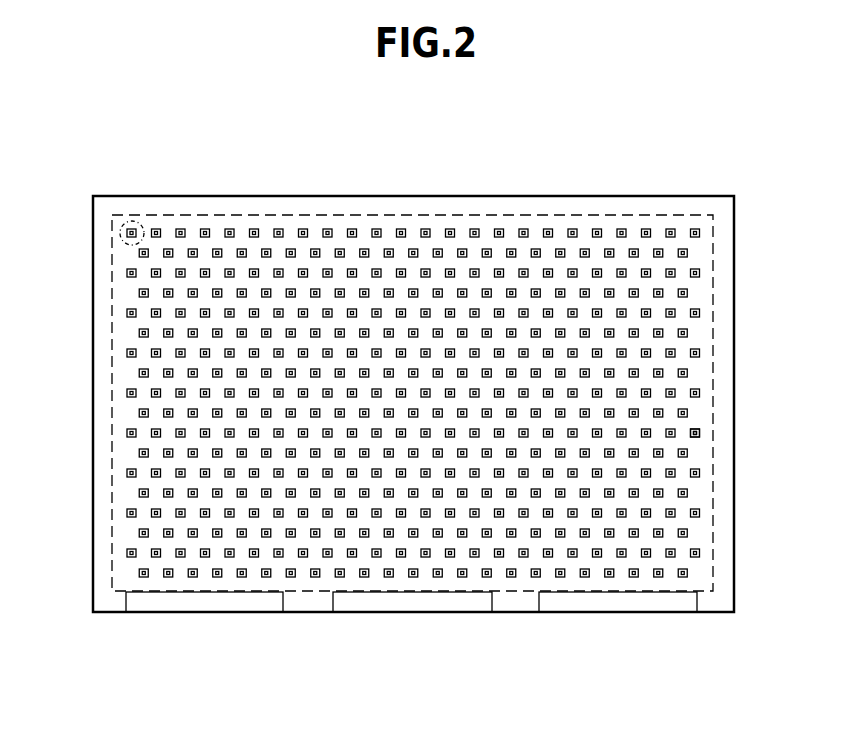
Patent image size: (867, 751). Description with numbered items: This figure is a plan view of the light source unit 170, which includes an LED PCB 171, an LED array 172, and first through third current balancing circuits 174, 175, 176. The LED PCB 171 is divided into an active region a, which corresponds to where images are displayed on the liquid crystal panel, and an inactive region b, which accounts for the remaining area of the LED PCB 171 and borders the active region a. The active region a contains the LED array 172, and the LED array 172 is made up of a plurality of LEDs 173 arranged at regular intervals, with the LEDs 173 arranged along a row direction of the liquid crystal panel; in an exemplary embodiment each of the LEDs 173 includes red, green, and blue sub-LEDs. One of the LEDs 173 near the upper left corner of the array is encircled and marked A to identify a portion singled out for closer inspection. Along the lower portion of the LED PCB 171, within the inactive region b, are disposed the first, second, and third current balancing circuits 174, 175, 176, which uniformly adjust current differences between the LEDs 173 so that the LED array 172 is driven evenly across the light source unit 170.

The light source unit 170 is at (688, 156).
The LED PCB 171 is at (477, 196).
The LED array 172 is at (82, 585).
The LED 173 is at (699, 434).
The first current balancing circuit 174 is at (205, 625).
The second current balancing circuit 175 is at (412, 625).
The third current balancing circuit 176 is at (617, 625).
The enlarged portion A is at (132, 221).
The active region a is at (713, 284).
The inactive region b is at (723, 393).